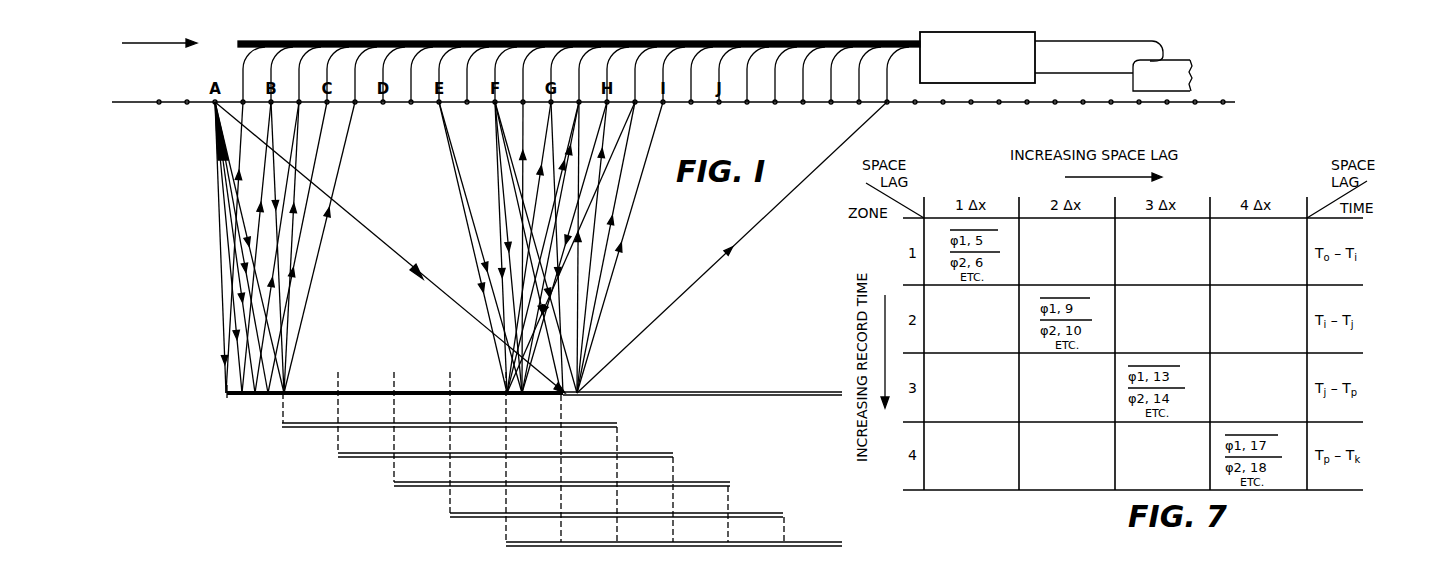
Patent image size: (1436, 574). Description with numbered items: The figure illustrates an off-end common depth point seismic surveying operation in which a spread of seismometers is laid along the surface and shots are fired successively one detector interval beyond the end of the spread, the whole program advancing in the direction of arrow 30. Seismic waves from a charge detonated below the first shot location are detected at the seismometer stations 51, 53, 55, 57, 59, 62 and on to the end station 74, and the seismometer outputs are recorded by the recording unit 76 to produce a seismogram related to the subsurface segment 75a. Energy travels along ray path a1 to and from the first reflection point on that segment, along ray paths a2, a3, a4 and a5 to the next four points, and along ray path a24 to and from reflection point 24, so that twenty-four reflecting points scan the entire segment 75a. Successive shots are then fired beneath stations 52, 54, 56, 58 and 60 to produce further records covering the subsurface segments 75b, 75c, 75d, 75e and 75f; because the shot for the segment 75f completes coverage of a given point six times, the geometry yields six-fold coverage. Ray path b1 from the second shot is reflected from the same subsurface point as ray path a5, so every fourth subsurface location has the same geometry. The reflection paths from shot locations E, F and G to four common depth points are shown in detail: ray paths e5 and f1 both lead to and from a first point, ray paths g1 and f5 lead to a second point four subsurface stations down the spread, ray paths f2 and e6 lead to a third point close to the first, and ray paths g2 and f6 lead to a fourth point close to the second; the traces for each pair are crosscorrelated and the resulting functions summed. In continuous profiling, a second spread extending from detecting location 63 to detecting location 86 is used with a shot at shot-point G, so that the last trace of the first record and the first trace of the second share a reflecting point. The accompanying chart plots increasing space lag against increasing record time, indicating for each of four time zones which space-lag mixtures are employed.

The arrow 30 is at (137, 43).
The seismometer station 51 is at (245, 104).
The shot station 52 is at (273, 104).
The seismometer station 53 is at (302, 104).
The shot station 54 is at (329, 104).
The seismometer station 55 is at (357, 104).
The shot station 56 is at (385, 104).
The seismometer station 57 is at (413, 104).
The shot station 58 is at (441, 104).
The seismometer station 59 is at (469, 104).
The shot station 60 is at (497, 103).
The seismometer station 62 is at (553, 103).
The detecting location 63 is at (581, 103).
The seismometer station 74 is at (888, 104).
The recording unit 76 is at (989, 68).
The detecting location 86 is at (1225, 104).
The reflection point 24 is at (567, 457).
The subsurface segment 75a is at (258, 402).
The subsurface segment 75b is at (315, 430).
The subsurface segment 75c is at (370, 460).
The subsurface segment 75d is at (426, 489).
The subsurface segment 75e is at (483, 520).
The subsurface segment 75f is at (540, 549).
The ray path a1 is at (240, 268).
The ray path a2 is at (258, 268).
The ray path a3 is at (247, 312).
The ray path a4 is at (258, 342).
The ray path a5 is at (273, 358).
The ray path a24 is at (457, 309).
The ray path b1 is at (277, 252).
The ray path e5 is at (466, 218).
The ray path e6 is at (462, 185).
The ray path f1 is at (500, 208).
The ray path f2 is at (503, 188).
The ray path f5 is at (503, 146).
The ray path f6 is at (515, 169).
The ray path g1 is at (555, 146).
The ray path g2 is at (560, 195).